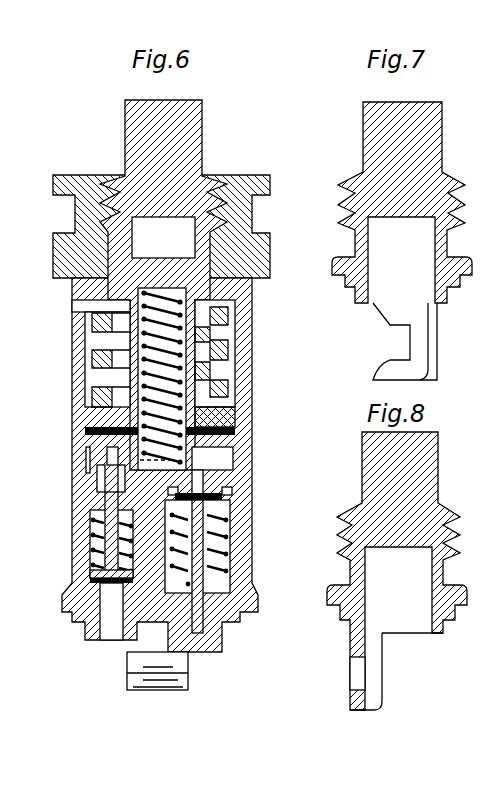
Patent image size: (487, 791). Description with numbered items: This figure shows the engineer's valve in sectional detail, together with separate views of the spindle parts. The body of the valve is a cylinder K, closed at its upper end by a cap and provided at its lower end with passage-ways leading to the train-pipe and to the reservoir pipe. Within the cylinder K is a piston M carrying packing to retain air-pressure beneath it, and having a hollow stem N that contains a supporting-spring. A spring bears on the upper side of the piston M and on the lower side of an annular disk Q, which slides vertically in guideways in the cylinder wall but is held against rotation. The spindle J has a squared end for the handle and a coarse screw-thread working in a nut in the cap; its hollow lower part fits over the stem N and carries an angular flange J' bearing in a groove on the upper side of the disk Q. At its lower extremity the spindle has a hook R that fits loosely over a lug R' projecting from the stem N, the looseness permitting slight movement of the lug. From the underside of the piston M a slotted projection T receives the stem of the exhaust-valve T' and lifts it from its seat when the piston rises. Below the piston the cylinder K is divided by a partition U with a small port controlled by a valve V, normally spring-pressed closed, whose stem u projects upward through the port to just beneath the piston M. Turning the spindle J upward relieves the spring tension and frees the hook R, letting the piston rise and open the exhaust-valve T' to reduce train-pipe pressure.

In FIG. 6, the spindle J is at (243, 395).
In FIG. 6, the stem N is at (153, 269).
In FIG. 6, the annular disk Q is at (72, 293).
In FIG. 6, the lug R' is at (243, 395).
In FIG. 6, the piston M is at (238, 419).
In FIG. 6, the downward projection T is at (86, 469).
In FIG. 6, the stem u is at (197, 458).
In FIG. 6, the partition U is at (233, 462).
In FIG. 6, the cylinder K is at (235, 486).
In FIG. 6, the valve V is at (218, 508).
In FIG. 6, the exhaust-valve T' is at (243, 395).
In FIG. 7, the angular flange J' is at (243, 395).
In FIG. 7, the hook R is at (415, 341).
In FIG. 8, the hook R is at (378, 671).